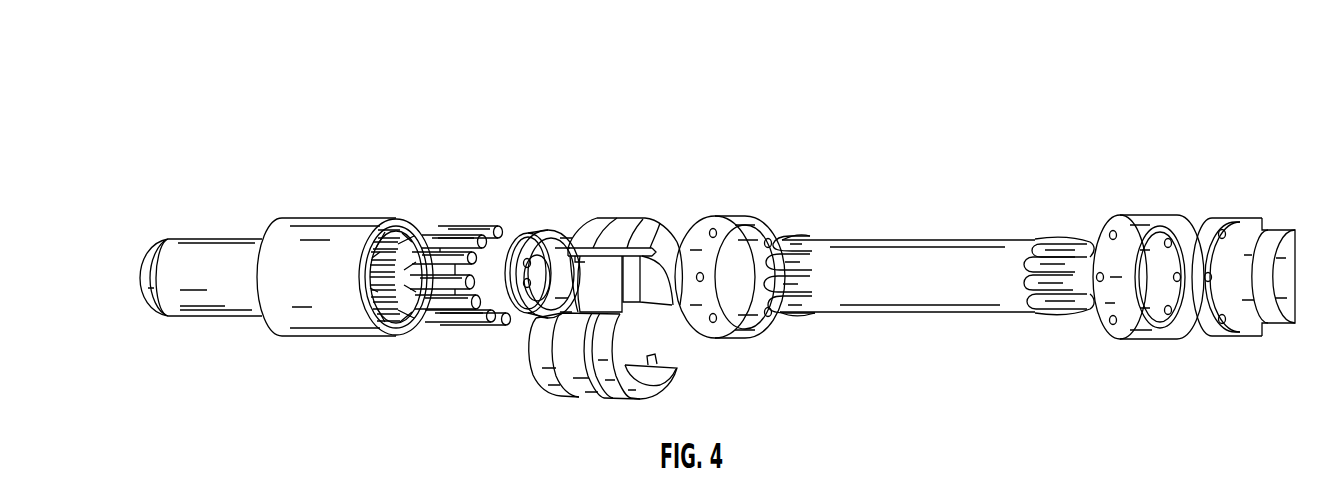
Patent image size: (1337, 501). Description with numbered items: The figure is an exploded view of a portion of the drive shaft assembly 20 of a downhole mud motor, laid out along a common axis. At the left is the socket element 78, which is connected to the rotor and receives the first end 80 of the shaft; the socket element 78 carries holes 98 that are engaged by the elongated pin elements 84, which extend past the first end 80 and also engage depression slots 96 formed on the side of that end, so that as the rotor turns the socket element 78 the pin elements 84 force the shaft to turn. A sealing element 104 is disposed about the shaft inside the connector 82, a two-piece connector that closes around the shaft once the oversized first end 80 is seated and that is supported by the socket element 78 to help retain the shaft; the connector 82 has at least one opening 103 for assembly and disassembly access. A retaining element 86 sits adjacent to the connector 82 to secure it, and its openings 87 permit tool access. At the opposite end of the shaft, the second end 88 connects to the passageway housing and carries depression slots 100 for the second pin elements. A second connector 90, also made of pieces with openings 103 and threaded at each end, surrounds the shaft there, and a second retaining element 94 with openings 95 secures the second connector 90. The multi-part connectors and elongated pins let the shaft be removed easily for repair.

The drive shaft assembly 20 is at (1048, 115).
The socket element 78 is at (303, 322).
The holes 98 is at (391, 228).
The pin element 84 is at (468, 318).
The sealing element 104 is at (545, 232).
The connector 82 is at (580, 403).
The opening 103 is at (578, 355).
The retaining element 86 is at (750, 335).
The openings 87 is at (713, 228).
The first end 80 is at (798, 307).
The depression slot 96 is at (760, 235).
The depression slot 100 is at (1043, 260).
The second end 88 is at (1073, 240).
The second retaining element 94 is at (1152, 215).
The openings 95 is at (1112, 232).
The second connector 90 is at (1210, 327).